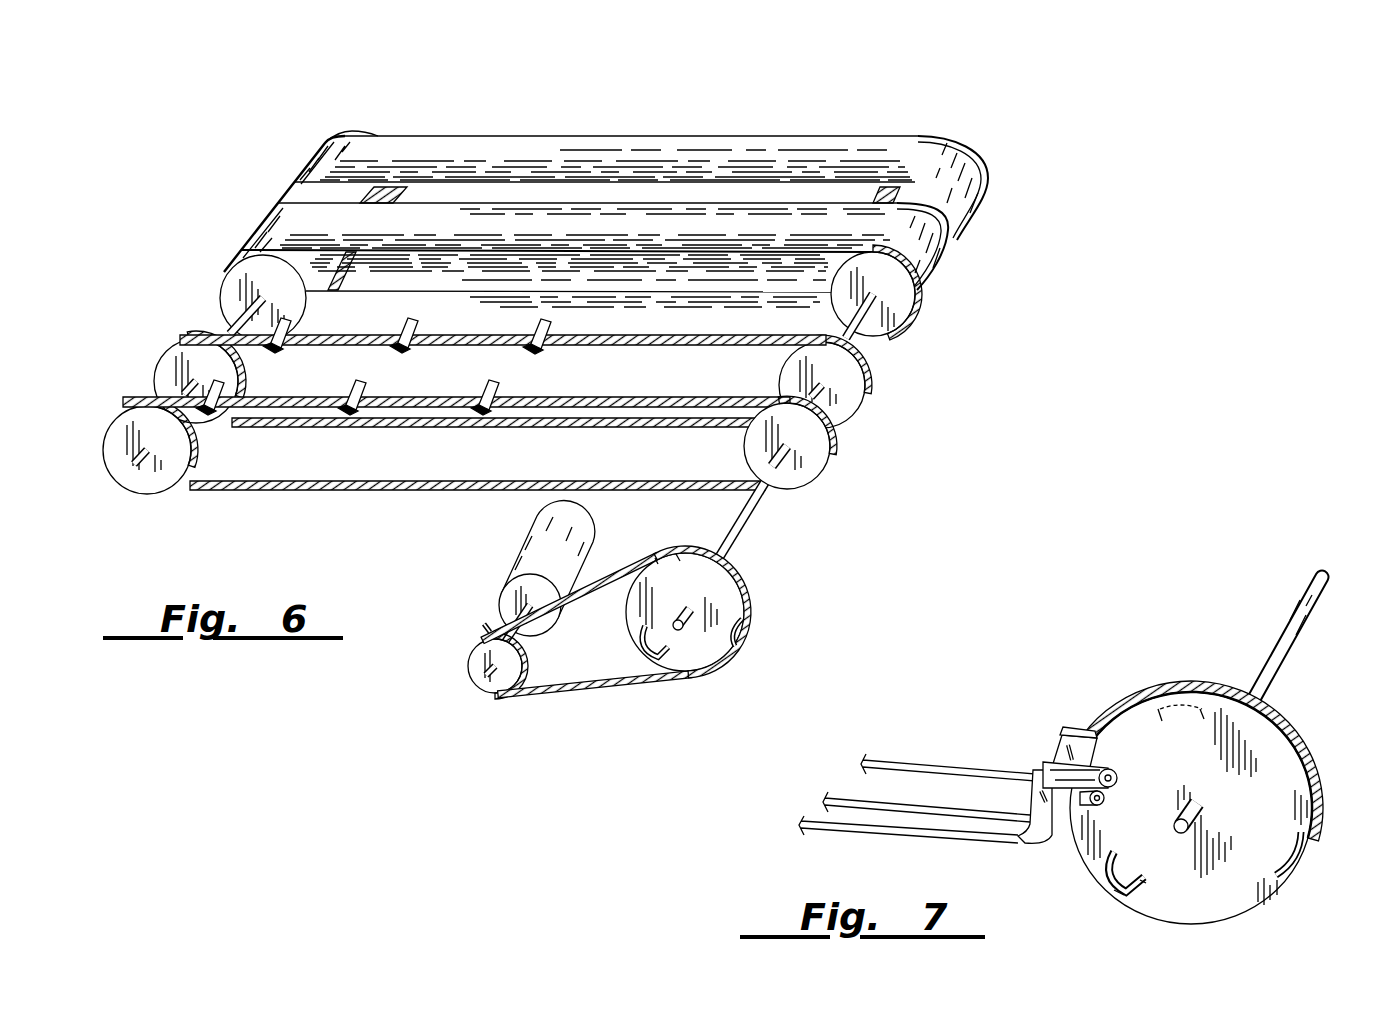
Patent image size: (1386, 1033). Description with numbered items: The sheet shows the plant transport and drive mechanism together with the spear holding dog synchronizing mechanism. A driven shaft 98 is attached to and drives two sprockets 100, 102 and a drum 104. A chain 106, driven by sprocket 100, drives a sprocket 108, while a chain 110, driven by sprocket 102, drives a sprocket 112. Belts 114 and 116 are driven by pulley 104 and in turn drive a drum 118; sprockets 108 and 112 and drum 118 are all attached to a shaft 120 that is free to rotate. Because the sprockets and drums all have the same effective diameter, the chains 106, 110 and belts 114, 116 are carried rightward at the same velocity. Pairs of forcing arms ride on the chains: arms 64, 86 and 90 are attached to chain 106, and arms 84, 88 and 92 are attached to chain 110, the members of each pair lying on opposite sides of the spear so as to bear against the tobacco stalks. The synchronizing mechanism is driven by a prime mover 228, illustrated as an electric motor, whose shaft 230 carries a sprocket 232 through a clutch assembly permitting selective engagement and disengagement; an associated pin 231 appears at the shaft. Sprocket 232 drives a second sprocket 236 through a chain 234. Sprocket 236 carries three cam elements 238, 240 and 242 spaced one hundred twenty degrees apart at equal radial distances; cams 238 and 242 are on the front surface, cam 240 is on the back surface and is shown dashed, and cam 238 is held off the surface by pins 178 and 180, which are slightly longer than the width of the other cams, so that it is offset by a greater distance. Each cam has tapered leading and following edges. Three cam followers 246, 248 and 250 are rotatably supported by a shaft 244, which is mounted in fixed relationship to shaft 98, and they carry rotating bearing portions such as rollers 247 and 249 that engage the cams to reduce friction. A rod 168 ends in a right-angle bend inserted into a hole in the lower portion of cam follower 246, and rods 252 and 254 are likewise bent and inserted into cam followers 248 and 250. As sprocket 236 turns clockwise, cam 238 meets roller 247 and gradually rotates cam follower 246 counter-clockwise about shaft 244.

In FIG. 6, the drum 118 is at (352, 132).
In FIG. 6, the drum 104 is at (950, 134).
In FIG. 6, the belt 116 is at (975, 190).
In FIG. 6, the belt 114 is at (930, 269).
In FIG. 6, the shaft 120 is at (245, 330).
In FIG. 6, the forcing arm 92 is at (298, 324).
In FIG. 6, the forcing arm 88 is at (420, 324).
In FIG. 6, the forcing arm 84 is at (553, 324).
In FIG. 6, the forcing arm 90 is at (235, 384).
In FIG. 6, the forcing arm 86 is at (379, 383).
In FIG. 6, the forcing arm 64 is at (512, 382).
In FIG. 6, the chain 110 is at (676, 336).
In FIG. 6, the chain 106 is at (637, 397).
In FIG. 6, the sprocket 112 is at (160, 372).
In FIG. 6, the sprocket 108 is at (142, 478).
In FIG. 6, the sprocket 102 is at (848, 396).
In FIG. 6, the sprocket 100 is at (812, 463).
In FIG. 6, the driven shaft 98 is at (746, 512).
In FIG. 7, the driven shaft 98 is at (1314, 593).
In FIG. 6, the prime mover 228 is at (524, 551).
In FIG. 6, the shaft 230 is at (524, 634).
In FIG. 6, the shaft pin 231 is at (479, 627).
In FIG. 6, the sprocket 232 is at (480, 669).
In FIG. 6, the chain 234 is at (556, 691).
In FIG. 6, the sprocket 236 is at (724, 593).
In FIG. 7, the sprocket 236 is at (1232, 906).
In FIG. 6, the cam element 240 is at (670, 553).
In FIG. 7, the cam element 240 is at (1164, 694).
In FIG. 6, the cam element 238 is at (666, 658).
In FIG. 7, the cam element 238 is at (1118, 890).
In FIG. 6, the cam element 242 is at (746, 641).
In FIG. 7, the cam element 242 is at (1302, 862).
In FIG. 7, the cam follower 250 is at (1075, 733).
In FIG. 7, the shaft 244 is at (1056, 746).
In FIG. 7, the cam follower 248 is at (1094, 766).
In FIG. 7, the rotating bearing portion 249 is at (1117, 777).
In FIG. 7, the rotating bearing portion 247 is at (1106, 802).
In FIG. 7, the rod 254 is at (929, 764).
In FIG. 7, the rod 252 is at (913, 801).
In FIG. 7, the rod 168 is at (871, 834).
In FIG. 7, the cam follower 246 is at (1064, 808).
In FIG. 7, the pin 178 is at (1121, 854).
In FIG. 7, the pin 180 is at (1143, 883).